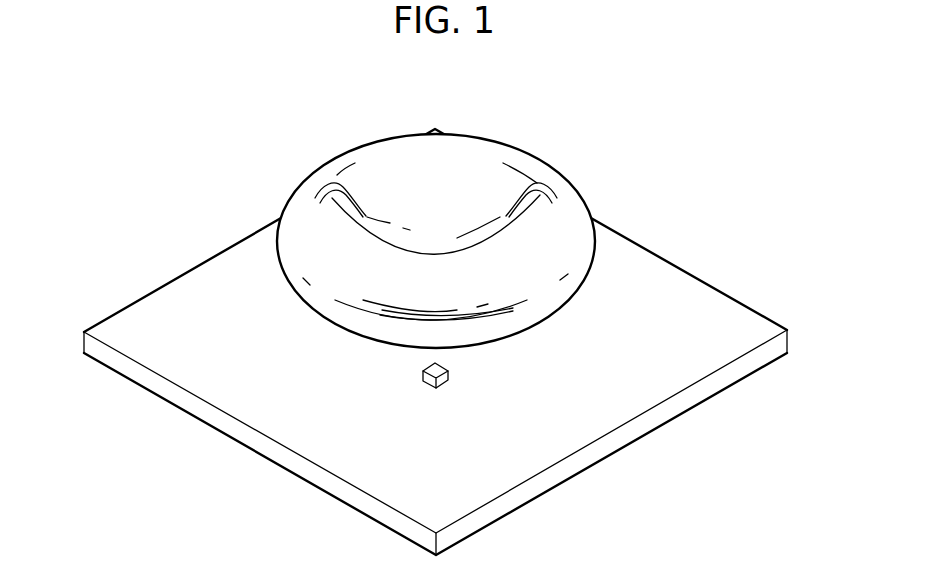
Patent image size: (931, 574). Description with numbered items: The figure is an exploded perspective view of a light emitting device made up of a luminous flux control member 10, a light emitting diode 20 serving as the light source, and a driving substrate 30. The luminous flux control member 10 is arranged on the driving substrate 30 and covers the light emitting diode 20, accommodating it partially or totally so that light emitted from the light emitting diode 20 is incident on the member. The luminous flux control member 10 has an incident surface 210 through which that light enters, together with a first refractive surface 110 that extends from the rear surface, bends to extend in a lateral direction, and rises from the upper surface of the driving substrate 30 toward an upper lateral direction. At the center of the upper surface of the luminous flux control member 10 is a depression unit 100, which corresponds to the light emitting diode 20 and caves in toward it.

The luminous flux control member 10 is at (572, 142).
The light emitting diode 20 is at (448, 377).
The driving substrate 30 is at (188, 290).
The depression unit 100 is at (446, 161).
The first refractive surface 110 is at (367, 170).
The incident surface 210 is at (288, 202).